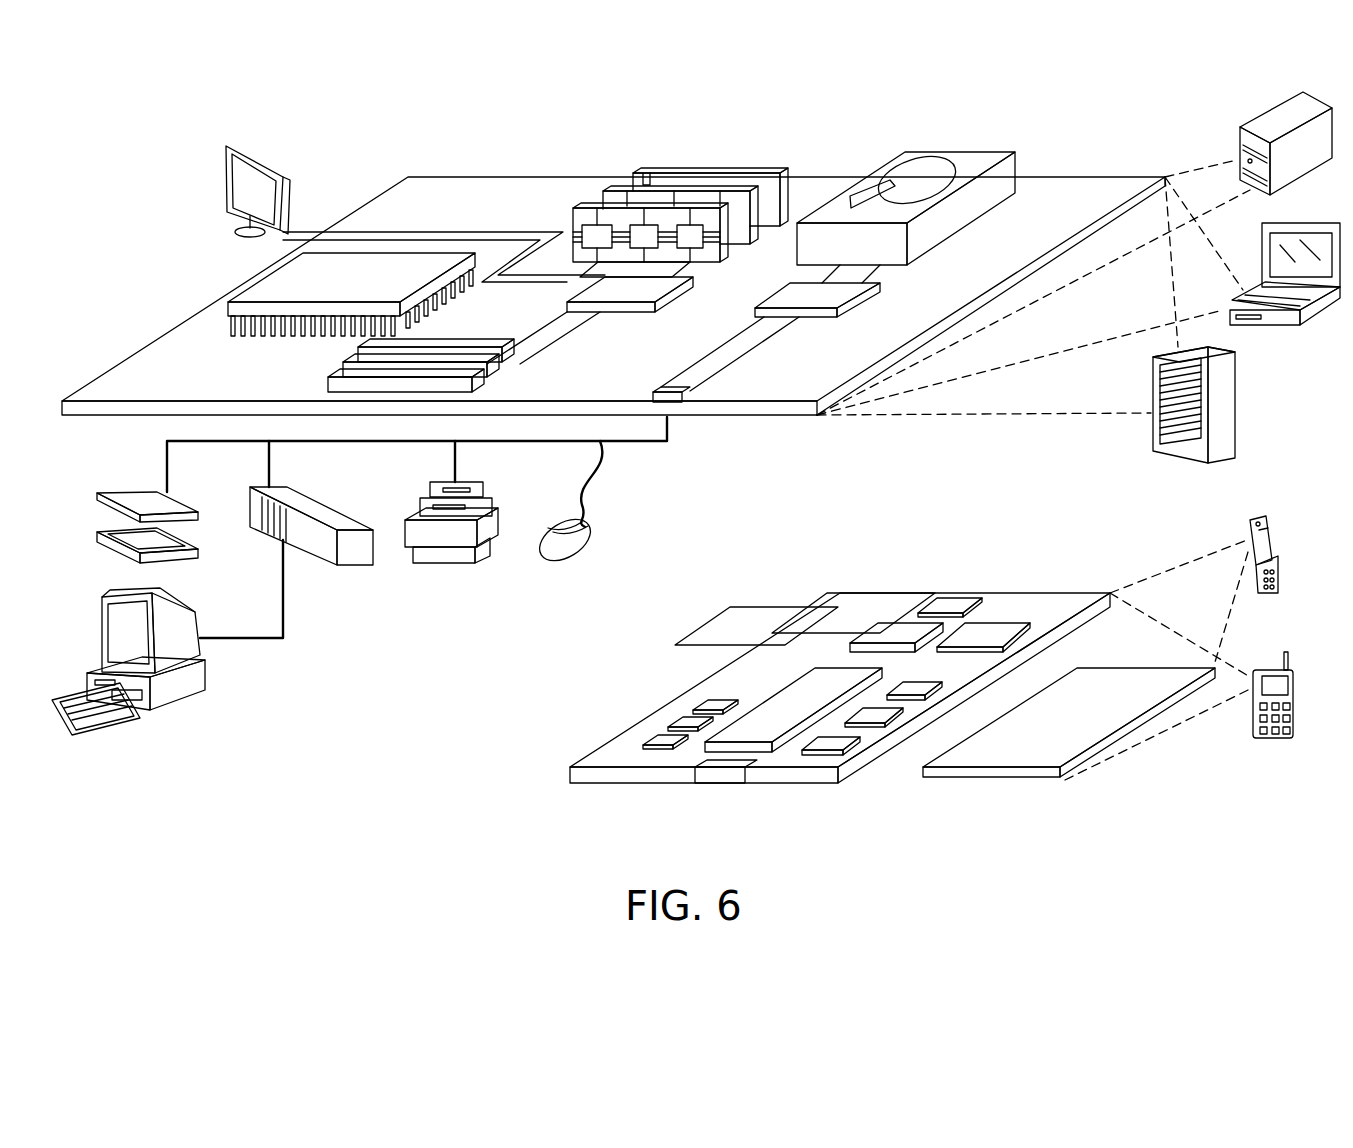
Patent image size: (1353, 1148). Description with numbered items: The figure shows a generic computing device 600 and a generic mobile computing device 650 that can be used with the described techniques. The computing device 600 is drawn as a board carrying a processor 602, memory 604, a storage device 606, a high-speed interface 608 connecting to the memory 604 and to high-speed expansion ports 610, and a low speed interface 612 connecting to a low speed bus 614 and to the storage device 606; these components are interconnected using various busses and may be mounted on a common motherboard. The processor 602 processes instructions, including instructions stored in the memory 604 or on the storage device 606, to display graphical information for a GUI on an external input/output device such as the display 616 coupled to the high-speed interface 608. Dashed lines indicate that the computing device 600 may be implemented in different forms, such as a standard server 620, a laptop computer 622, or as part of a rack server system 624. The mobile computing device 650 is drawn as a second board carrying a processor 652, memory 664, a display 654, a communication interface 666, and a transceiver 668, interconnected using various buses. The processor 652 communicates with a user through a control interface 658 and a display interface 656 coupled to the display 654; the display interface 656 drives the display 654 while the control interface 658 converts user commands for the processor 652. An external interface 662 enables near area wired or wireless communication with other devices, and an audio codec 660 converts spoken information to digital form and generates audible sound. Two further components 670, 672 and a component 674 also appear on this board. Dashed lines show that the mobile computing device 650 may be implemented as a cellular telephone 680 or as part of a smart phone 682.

The computing device 600 is at (360, 122).
The processor 602 is at (255, 283).
The memory 604 is at (714, 170).
The storage device 606 is at (950, 153).
The high-speed interface 608 is at (644, 292).
The high-speed expansion ports 610 is at (352, 362).
The low speed interface 612 is at (790, 298).
The low speed bus 614 is at (672, 391).
The display 616 is at (232, 143).
The standard server 620 is at (1262, 122).
The laptop computer 622 is at (1320, 224).
The rack server system 624 is at (1236, 403).
The mobile computing device 650 is at (524, 794).
The processor 652 is at (760, 717).
The display 654 is at (1110, 685).
The display interface 656 is at (845, 740).
The control interface 658 is at (880, 714).
The audio codec 660 is at (918, 683).
The external interface 662 is at (722, 770).
The memory 664 is at (672, 722).
The communication interface 666 is at (898, 627).
The transceiver 668 is at (990, 627).
The component 670 is at (950, 600).
The display component 672 is at (822, 607).
The display component 674 is at (737, 607).
The cellular telephone 680 is at (1258, 518).
The smart phone 682 is at (1272, 668).